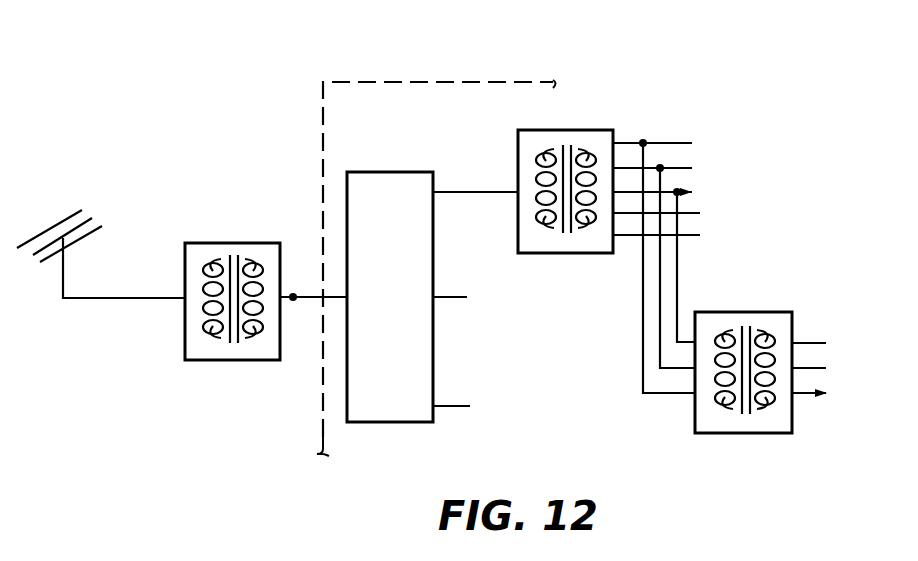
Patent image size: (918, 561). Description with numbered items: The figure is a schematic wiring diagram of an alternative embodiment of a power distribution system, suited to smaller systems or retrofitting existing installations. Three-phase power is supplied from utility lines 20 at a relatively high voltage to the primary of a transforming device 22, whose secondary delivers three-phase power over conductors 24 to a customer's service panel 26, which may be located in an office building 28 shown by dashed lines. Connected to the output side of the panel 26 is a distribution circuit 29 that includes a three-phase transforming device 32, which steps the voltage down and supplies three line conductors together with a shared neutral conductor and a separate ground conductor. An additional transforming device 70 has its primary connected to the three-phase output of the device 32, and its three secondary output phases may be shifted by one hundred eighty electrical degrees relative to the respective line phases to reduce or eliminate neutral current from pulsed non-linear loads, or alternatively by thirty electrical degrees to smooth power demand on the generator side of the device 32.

The utility lines 20 is at (109, 207).
The transforming device 22 is at (227, 250).
The conductors 24 is at (293, 298).
The service panel 26 is at (407, 177).
The office building 28 is at (400, 80).
The distribution circuit 29 is at (643, 127).
The transforming device 32 is at (563, 138).
The transforming device 70 is at (753, 430).